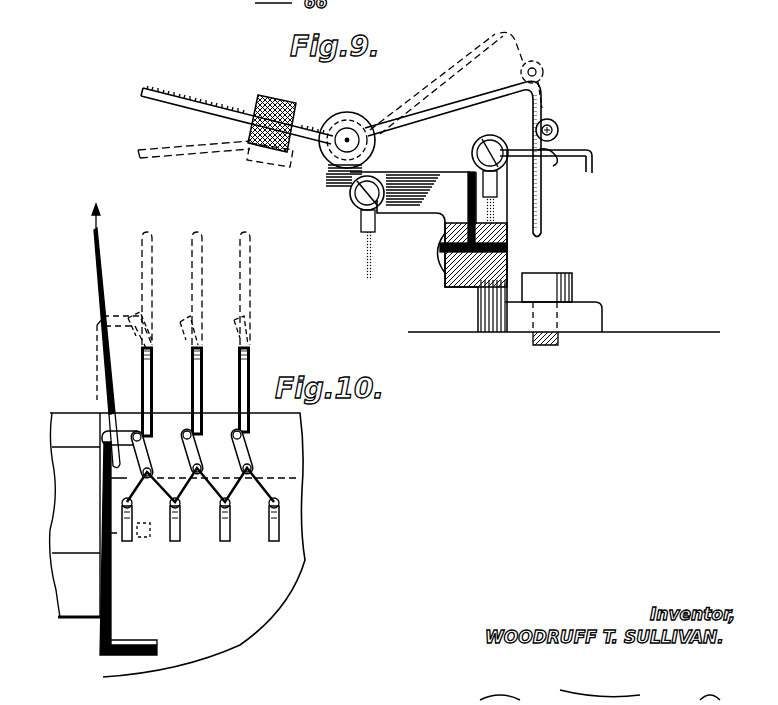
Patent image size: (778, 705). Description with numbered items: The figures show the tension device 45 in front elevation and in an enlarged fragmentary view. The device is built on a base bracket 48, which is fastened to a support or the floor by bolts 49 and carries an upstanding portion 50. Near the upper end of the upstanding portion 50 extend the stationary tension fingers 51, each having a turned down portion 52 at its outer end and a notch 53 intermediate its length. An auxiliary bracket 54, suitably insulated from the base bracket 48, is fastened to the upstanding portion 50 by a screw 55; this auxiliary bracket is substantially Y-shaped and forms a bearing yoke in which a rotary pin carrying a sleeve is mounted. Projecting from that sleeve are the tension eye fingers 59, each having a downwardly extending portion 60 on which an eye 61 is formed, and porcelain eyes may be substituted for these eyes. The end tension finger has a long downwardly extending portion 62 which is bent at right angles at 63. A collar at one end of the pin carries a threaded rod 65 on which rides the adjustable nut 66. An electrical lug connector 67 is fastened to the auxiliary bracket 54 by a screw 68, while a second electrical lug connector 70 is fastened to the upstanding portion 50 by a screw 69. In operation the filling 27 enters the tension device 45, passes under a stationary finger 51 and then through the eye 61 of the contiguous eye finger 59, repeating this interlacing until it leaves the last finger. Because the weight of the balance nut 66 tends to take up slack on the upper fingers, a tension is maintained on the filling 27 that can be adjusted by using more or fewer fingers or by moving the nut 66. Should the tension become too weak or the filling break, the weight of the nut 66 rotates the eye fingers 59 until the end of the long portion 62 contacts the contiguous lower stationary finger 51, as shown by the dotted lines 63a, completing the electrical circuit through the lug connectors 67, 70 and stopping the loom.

In FIG. 10, the filling 27 is at (99, 290).
In FIG. 9, the tension device 45 is at (337, 153).
In FIG. 9, the base bracket 48 is at (585, 316).
In FIG. 9, the bolts 49 is at (560, 285).
In FIG. 9, the upstanding portion 50 is at (510, 278).
In FIG. 10, the upstanding portion 50 is at (243, 598).
In FIG. 9, the stationary tension fingers 51 is at (603, 158).
In FIG. 10, the stationary tension fingers 51 is at (290, 530).
In FIG. 9, the turned down portion 52 is at (591, 171).
In FIG. 10, the turned down portion 52 is at (273, 543).
In FIG. 9, the notch 53 is at (551, 156).
In FIG. 10, the notch 53 is at (250, 505).
In FIG. 9, the auxiliary bracket 54 is at (407, 210).
In FIG. 9, the screw 55 is at (440, 262).
In FIG. 9, the tension eye fingers 59 is at (474, 104).
In FIG. 10, the tension eye fingers 59 is at (143, 368).
In FIG. 9, the downwardly extending portion 60 is at (541, 96).
In FIG. 10, the downwardly extending portion 60 is at (246, 373).
In FIG. 9, the eye 61 is at (555, 122).
In FIG. 9, the long downwardly extending portion 62 is at (543, 210).
In FIG. 10, the long downwardly extending portion 62 is at (101, 567).
In FIG. 10, the right-angle bend 63 is at (150, 647).
In FIG. 10, the dotted-line contact position 63a is at (136, 536).
In FIG. 9, the threaded rod 65 is at (187, 92).
In FIG. 9, the adjustable nut 66 is at (277, 97).
In FIG. 9, the electrical lug connector 67 is at (362, 207).
In FIG. 9, the screw 68 is at (388, 181).
In FIG. 9, the screw 69 is at (494, 136).
In FIG. 9, the electrical lug connector 70 is at (485, 185).